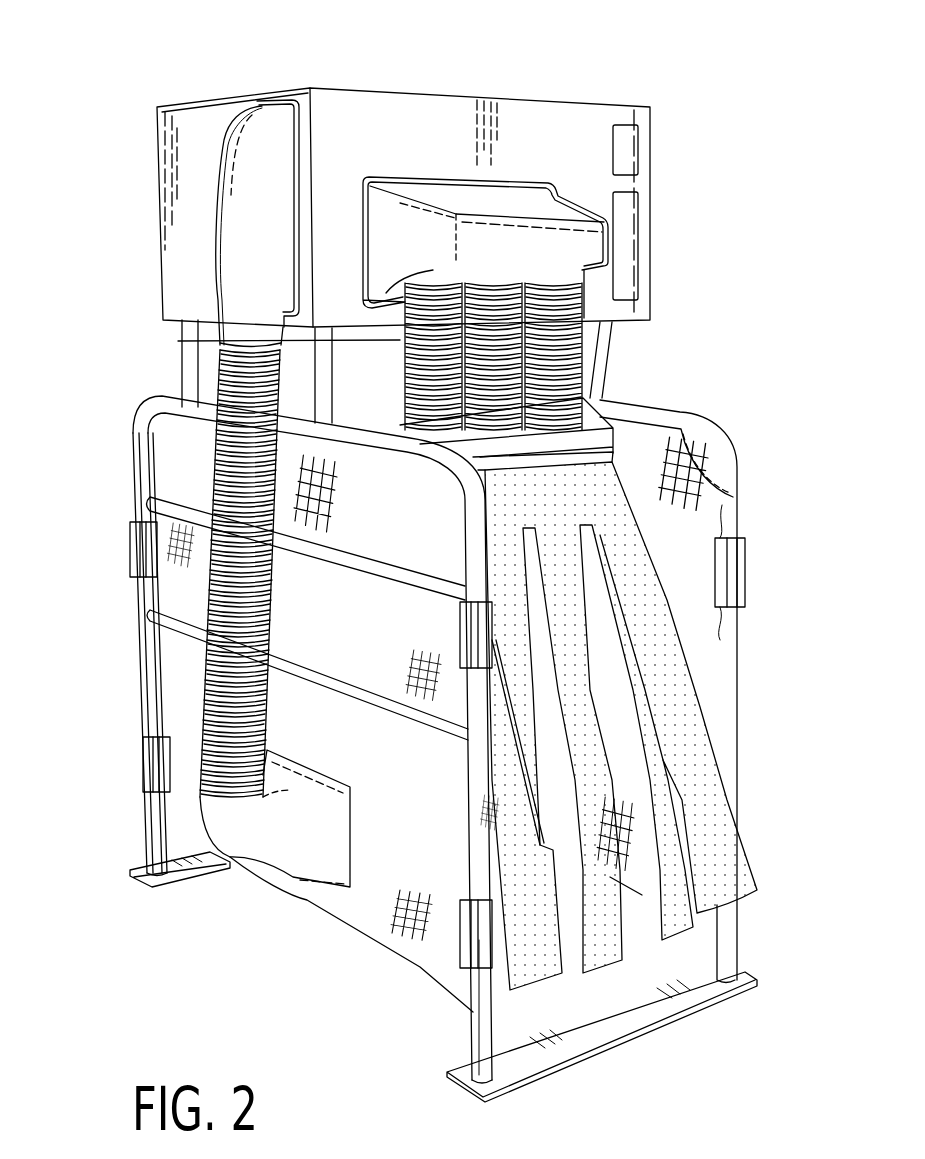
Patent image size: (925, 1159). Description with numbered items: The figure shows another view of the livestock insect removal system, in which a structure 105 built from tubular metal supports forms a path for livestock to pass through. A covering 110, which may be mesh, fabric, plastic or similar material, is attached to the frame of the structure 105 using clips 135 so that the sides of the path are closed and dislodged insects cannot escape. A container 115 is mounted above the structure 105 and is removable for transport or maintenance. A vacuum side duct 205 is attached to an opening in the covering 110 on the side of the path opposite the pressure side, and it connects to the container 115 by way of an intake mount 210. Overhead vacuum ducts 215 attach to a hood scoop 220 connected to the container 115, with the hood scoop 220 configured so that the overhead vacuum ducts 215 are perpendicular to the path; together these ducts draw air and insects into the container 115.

The structure 105 is at (707, 413).
The covering 110 is at (713, 515).
The container 115 is at (418, 117).
The clips 135 is at (742, 577).
The vacuum side duct 205 is at (200, 695).
The intake mount 210 is at (273, 160).
The overhead vacuum ducts 215 is at (577, 382).
The hood scoop 220 is at (573, 237).